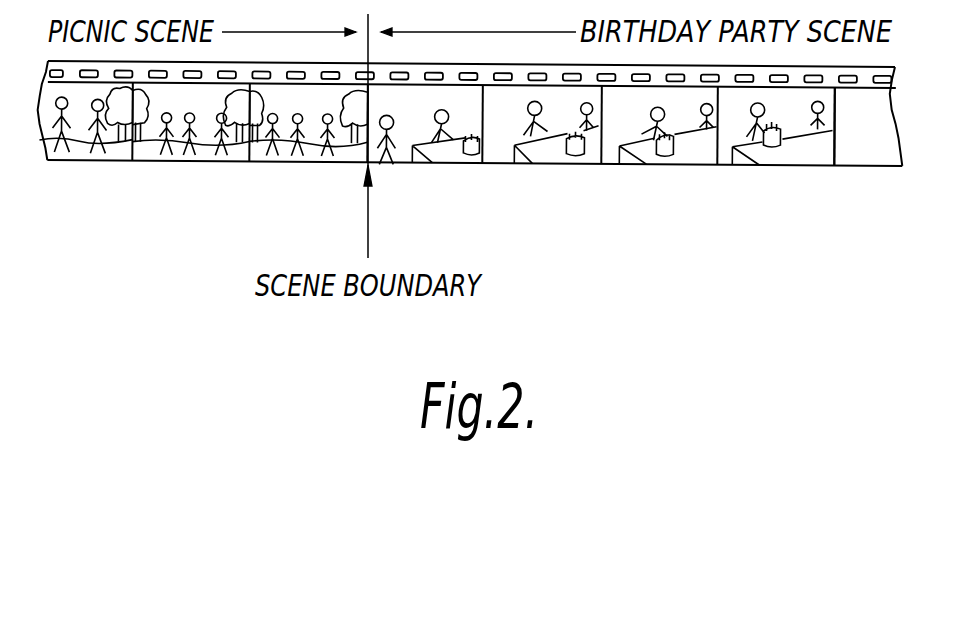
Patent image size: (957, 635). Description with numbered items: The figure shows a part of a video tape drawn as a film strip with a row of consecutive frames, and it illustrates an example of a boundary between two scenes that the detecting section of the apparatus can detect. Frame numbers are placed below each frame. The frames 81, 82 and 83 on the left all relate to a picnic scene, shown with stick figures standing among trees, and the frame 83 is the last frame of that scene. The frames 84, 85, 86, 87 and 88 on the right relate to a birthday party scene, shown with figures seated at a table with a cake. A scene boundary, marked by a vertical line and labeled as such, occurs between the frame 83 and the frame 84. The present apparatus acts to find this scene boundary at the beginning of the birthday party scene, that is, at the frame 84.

The frame 81 is at (86, 154).
The frame 82 is at (191, 155).
The frame 83 is at (308, 155).
The frame 84 is at (430, 156).
The frame 85 is at (558, 157).
The frame 86 is at (668, 159).
The frame 87 is at (783, 159).
The frame 88 is at (874, 159).